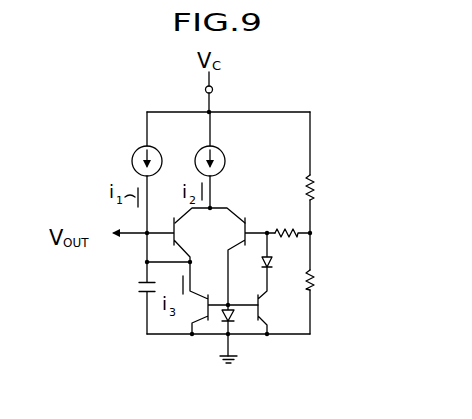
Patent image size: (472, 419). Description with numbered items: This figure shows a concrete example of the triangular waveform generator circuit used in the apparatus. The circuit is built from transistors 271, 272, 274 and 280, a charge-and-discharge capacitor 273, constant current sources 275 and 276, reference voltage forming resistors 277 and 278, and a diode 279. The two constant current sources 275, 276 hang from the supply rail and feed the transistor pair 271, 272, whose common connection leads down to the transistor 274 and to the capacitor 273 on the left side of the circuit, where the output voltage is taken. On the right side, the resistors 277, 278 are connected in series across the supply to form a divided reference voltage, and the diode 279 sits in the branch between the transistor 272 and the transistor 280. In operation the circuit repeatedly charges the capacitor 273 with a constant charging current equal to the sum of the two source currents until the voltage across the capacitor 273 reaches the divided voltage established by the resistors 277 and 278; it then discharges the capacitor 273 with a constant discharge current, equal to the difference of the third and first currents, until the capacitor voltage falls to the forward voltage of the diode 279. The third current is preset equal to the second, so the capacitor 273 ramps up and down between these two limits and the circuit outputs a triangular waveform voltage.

The transistor 271 is at (170, 221).
The transistor 272 is at (252, 219).
The charge-and-discharge capacitor 273 is at (143, 294).
The transistor 274 is at (205, 324).
The constant current source 275 is at (138, 149).
The constant current source 276 is at (224, 158).
The reference voltage forming resistor 277 is at (318, 189).
The reference voltage forming resistor 278 is at (318, 281).
The diode 279 is at (275, 258).
The transistor 280 is at (262, 302).